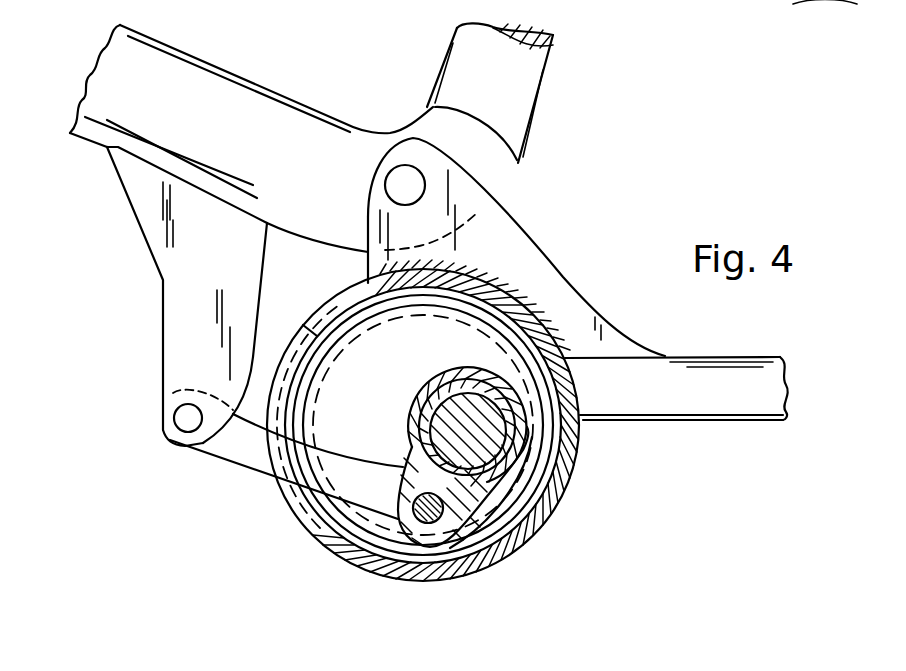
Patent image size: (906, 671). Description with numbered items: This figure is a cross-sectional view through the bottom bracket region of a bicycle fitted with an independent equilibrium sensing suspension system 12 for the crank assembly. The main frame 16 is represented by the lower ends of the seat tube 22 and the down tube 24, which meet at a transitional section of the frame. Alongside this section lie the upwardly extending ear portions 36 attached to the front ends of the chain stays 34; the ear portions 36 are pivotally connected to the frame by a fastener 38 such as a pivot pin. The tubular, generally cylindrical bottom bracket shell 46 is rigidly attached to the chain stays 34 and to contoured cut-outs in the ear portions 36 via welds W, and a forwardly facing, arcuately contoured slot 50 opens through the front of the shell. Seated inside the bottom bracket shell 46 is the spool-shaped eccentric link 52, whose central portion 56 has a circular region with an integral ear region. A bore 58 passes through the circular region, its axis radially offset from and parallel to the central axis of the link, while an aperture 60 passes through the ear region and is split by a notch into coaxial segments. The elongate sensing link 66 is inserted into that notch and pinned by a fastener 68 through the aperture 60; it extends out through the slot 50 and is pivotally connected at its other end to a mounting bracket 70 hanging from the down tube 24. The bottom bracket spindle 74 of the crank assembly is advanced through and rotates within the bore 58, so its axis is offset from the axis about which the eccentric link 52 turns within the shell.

The independent equilibrium sensing suspension system 12 is at (343, 546).
The main frame 16 is at (289, 88).
The seat tube 22 is at (523, 83).
The down tube 24 is at (200, 83).
The chain stays 34 is at (720, 410).
The ear portion 36 is at (520, 242).
The fastener 38 is at (407, 183).
The bottom bracket shell 46 is at (278, 514).
The slot 50 is at (293, 347).
The eccentric link 52 is at (513, 532).
The central portion 56 is at (517, 457).
The bore 58 is at (742, 0).
The aperture 60 is at (638, 10).
The sensing link 66 is at (233, 445).
The fastener 68 is at (440, 530).
The mounting bracket 70 is at (190, 302).
The bottom bracket spindle 74 is at (423, 388).
The welds W is at (535, 293).